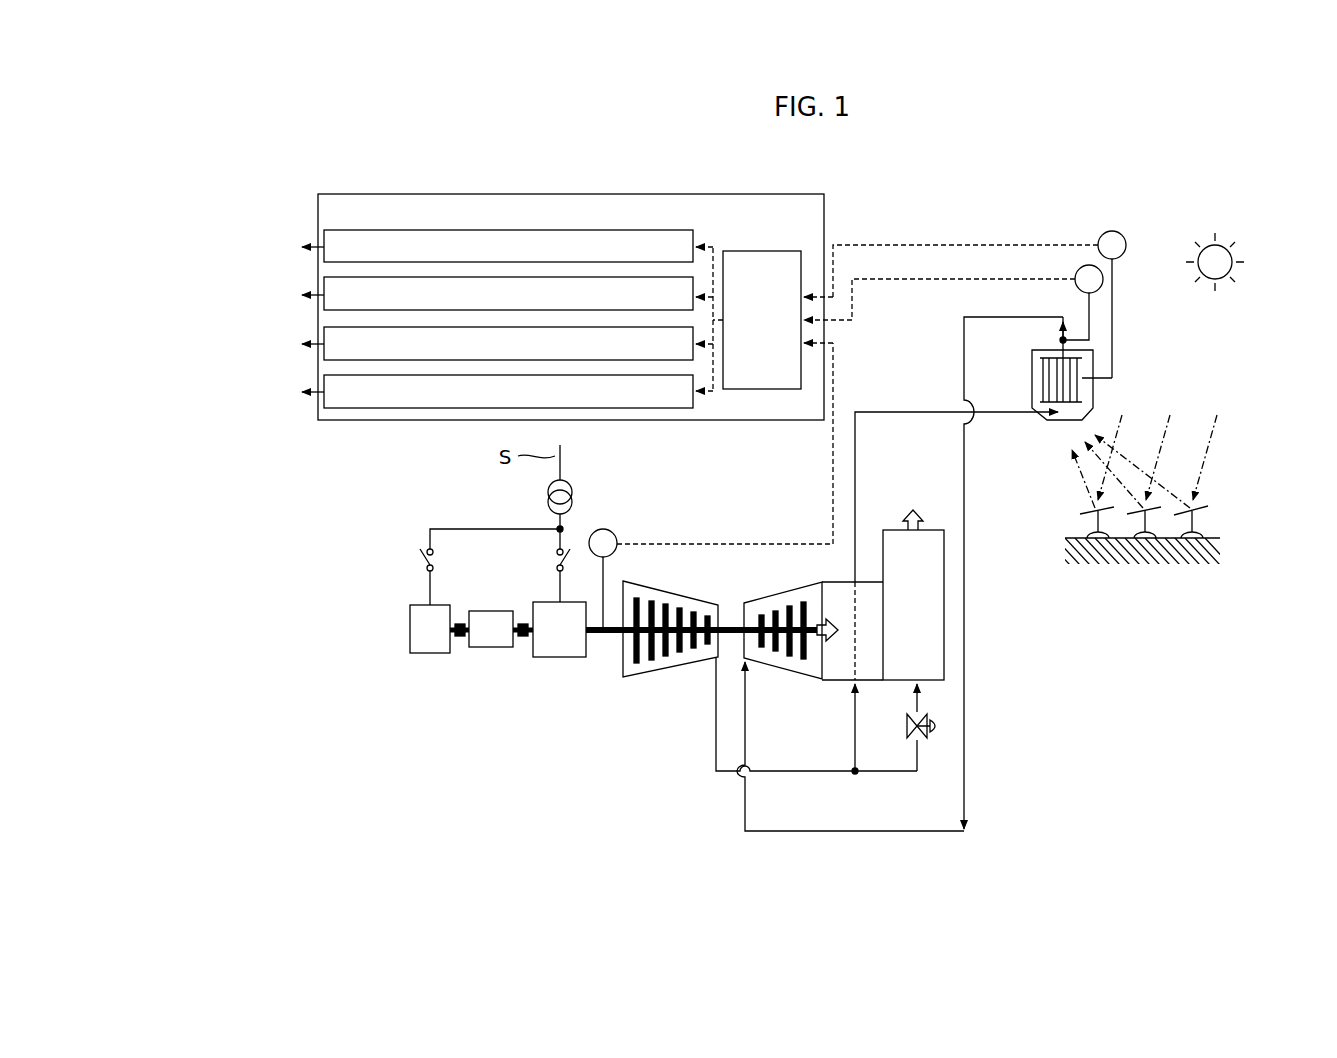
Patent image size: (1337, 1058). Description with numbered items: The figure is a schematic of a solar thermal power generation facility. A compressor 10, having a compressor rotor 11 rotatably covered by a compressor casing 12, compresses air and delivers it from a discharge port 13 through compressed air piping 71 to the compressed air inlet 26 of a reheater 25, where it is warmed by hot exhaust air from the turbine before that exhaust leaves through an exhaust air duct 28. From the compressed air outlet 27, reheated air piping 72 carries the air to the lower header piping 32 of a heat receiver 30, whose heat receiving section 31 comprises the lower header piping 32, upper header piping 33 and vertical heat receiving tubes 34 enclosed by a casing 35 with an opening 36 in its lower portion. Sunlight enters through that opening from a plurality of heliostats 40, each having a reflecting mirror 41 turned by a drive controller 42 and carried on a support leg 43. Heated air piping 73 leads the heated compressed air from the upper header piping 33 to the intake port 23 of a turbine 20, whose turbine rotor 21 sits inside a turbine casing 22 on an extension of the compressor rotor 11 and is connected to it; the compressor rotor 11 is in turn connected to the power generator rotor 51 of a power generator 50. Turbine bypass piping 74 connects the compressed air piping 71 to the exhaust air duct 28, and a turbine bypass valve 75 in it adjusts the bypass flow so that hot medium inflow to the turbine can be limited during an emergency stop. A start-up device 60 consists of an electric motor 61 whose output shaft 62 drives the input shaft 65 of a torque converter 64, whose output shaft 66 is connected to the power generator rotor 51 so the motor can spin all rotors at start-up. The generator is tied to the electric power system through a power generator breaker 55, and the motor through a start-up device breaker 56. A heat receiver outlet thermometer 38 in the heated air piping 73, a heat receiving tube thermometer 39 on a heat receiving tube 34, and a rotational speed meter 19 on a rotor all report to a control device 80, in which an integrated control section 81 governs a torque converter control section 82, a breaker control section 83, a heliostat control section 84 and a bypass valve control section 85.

The compressor 10 is at (654, 678).
The compressor rotor 11 is at (660, 665).
The compressor casing 12 is at (628, 678).
The discharge port 13 is at (712, 660).
The rotational speed meter 19 is at (614, 531).
The turbine 20 is at (783, 674).
The turbine rotor 21 is at (798, 663).
The turbine casing 22 is at (773, 667).
The intake port 23 is at (740, 660).
The reheater 25 is at (866, 578).
The compressed air inlet 26 is at (858, 688).
The compressed air outlet 27 is at (853, 580).
The exhaust air duct 28 is at (935, 620).
The heat receiver 30 is at (1099, 400).
The heat receiving section 31 is at (1126, 358).
The lower header piping 32 is at (1121, 380).
The upper header piping 33 is at (1093, 358).
The heat receiving tubes 34 is at (1093, 372).
The casing 35 is at (1032, 368).
The opening 36 is at (1036, 423).
The heat receiver outlet thermometer 38 is at (1075, 278).
The heat receiving tube thermometer 39 is at (1098, 243).
The heliostats 40 is at (1175, 516).
The reflecting mirror 41 is at (1173, 498).
The drive controller 42 is at (1194, 521).
The support leg 43 is at (1203, 536).
The power generator 50 is at (549, 658).
The power generator rotor 51 is at (592, 636).
The power generator breaker 55 is at (567, 548).
The start-up device breaker 56 is at (426, 563).
The start-up device 60 is at (472, 656).
The electric motor 61 is at (432, 656).
The output shaft 62 is at (460, 624).
The torque converter 64 is at (490, 650).
The input shaft 65 is at (471, 611).
The output shaft 66 is at (516, 614).
The compressed air piping 71 is at (713, 757).
The reheated air piping 72 is at (870, 410).
The heated air piping 73 is at (962, 333).
The turbine bypass piping 74 is at (885, 775).
The turbine bypass valve 75 is at (920, 742).
The control device 80 is at (316, 194).
The integrated control section 81 is at (745, 392).
The torque converter control section 82 is at (324, 243).
The breaker control section 83 is at (324, 290).
The heliostat control section 84 is at (324, 338).
The bypass valve control section 85 is at (324, 386).